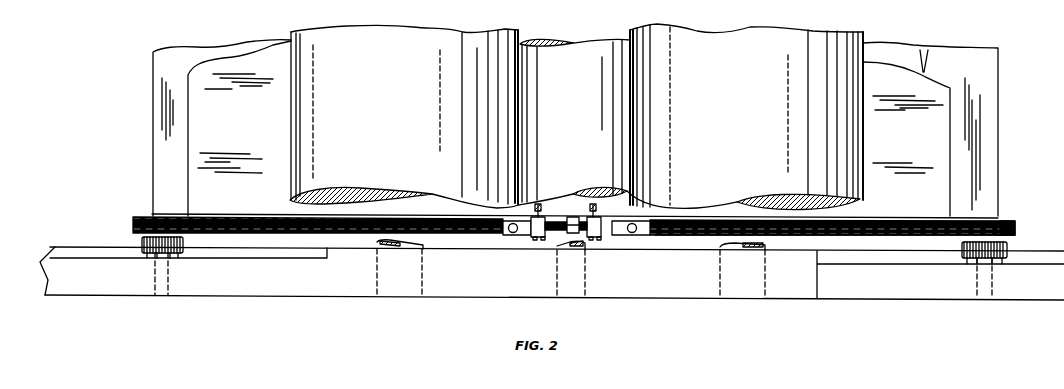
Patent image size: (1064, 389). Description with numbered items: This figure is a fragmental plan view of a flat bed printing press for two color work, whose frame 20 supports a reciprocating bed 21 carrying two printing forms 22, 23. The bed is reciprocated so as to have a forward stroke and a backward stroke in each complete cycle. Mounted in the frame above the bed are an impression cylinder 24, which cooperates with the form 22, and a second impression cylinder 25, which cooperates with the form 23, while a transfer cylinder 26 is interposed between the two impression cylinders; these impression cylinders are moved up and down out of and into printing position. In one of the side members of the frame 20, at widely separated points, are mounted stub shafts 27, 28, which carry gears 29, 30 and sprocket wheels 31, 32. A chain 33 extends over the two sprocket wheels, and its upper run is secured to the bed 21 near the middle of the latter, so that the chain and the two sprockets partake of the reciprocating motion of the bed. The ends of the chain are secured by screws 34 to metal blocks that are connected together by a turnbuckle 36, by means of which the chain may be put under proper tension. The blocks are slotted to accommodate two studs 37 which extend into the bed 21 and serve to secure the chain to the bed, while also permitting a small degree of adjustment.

The frame 20 is at (947, 293).
The reciprocating bed 21 is at (988, 181).
The printing form 22 is at (188, 196).
The printing form 23 is at (937, 88).
The impression cylinder 24 is at (291, 134).
The second impression cylinder 25 is at (850, 126).
The transfer cylinder 26 is at (583, 48).
The stub shaft 27 is at (173, 288).
The stub shaft 28 is at (998, 295).
The gear 29 is at (142, 243).
The gear 30 is at (1007, 243).
The sprocket wheel 31 is at (140, 219).
The sprocket wheel 32 is at (1005, 220).
The chain 33 is at (880, 238).
The screws 34 is at (513, 237).
The turnbuckle 36 is at (572, 235).
The studs 37 is at (538, 240).